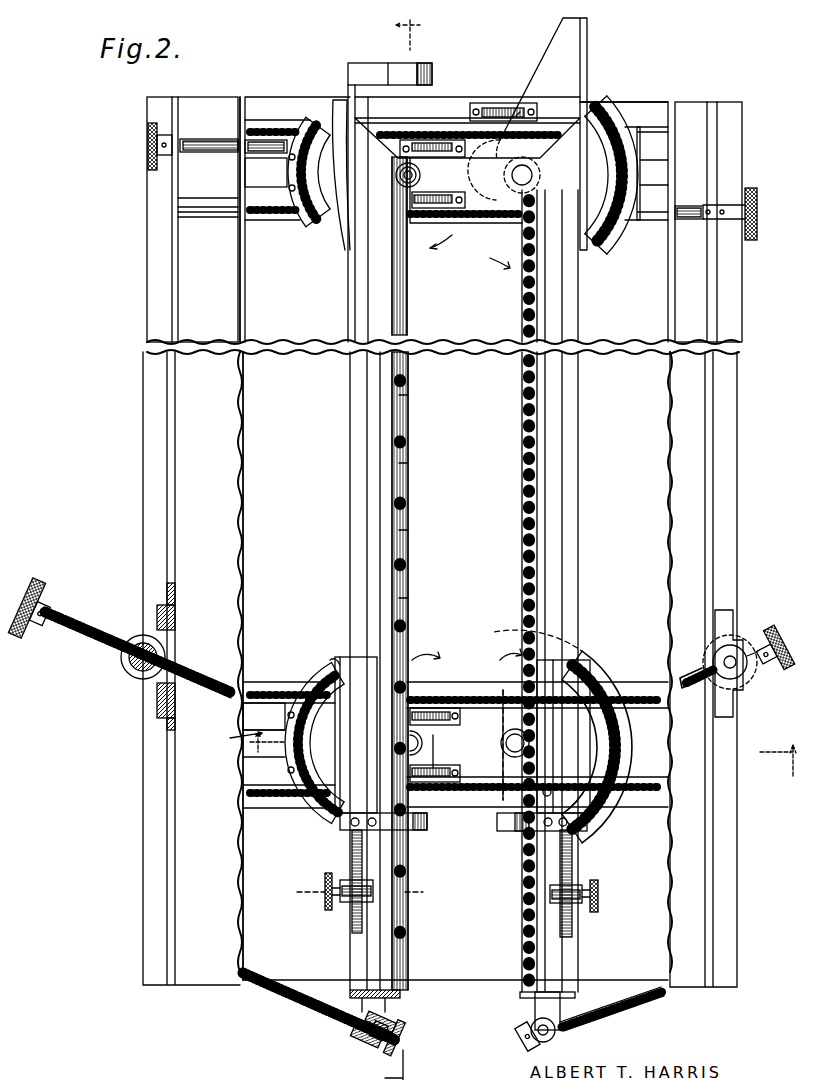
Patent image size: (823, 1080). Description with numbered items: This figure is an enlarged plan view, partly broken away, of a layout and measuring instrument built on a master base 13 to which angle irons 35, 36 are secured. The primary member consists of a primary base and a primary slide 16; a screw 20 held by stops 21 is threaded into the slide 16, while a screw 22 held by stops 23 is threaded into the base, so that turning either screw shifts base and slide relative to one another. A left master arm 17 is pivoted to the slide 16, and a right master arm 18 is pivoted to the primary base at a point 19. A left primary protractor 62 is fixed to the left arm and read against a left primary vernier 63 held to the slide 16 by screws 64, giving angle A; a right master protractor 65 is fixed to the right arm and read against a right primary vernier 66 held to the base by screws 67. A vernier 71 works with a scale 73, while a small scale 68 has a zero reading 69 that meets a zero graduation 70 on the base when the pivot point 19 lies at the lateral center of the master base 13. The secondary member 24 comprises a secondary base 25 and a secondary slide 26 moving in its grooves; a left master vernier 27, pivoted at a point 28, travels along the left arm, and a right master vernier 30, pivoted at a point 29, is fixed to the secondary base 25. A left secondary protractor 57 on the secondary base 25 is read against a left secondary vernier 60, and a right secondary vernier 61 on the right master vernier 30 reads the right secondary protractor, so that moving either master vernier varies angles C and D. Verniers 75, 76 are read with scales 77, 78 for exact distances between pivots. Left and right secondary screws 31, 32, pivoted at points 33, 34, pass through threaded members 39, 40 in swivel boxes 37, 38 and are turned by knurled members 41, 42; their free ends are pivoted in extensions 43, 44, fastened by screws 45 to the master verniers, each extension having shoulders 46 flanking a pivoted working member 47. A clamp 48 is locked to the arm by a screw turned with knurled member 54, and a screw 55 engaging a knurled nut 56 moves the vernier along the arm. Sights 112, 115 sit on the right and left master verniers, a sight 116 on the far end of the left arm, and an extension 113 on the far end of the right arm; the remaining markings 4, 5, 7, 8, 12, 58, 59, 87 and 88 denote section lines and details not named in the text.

The master base 13 is at (640, 487).
The angle iron 35 is at (170, 442).
The angle iron 36 is at (712, 412).
The left master arm 17 is at (365, 428).
The right master arm 18 is at (420, 176).
The sight 116 is at (420, 68).
The section line 7 is at (408, 550).
The extension 113 is at (590, 44).
The scale 73 is at (440, 125).
The small scale 68 is at (478, 105).
The zero reading 69 is at (520, 112).
The zero reading graduation 70 is at (530, 135).
The vernier 71 is at (418, 142).
The vernier scale 12 is at (466, 197).
The secondary member 24 is at (278, 118).
The guide grooves 87 is at (210, 212).
The stops 21 is at (164, 132).
The screw 20 is at (208, 138).
The screws 64 is at (290, 186).
The left primary vernier 63 is at (312, 118).
The left primary protractor 62 is at (340, 105).
The pivot point 19 is at (512, 174).
The right master protractor 65 is at (604, 110).
The right primary vernier 66 is at (632, 127).
The screws 67 is at (655, 130).
The base strip 88 is at (690, 115).
The primary slide 16 is at (660, 157).
The screw 22 is at (694, 218).
The stops 23 is at (742, 200).
The angle A is at (439, 250).
The arrow 8 is at (500, 255).
The swivel box 37 is at (120, 662).
The pivot point 33 is at (130, 665).
The threaded member 39 is at (140, 632).
The left secondary screw 31 is at (190, 668).
The knurled member 41 is at (35, 580).
The secondary base 25 is at (272, 800).
The scale 77 is at (245, 706).
The protractor plate 58 is at (298, 705).
The left secondary protractor 57 is at (318, 670).
The left secondary vernier 60 is at (332, 662).
The left master vernier 27 is at (345, 660).
The secondary slide 26 is at (486, 715).
The angle C is at (426, 661).
The angle D is at (506, 659).
The vernier 75 is at (445, 718).
The vernier 76 is at (452, 782).
The scale 78 is at (440, 795).
The pivot point 28 is at (415, 740).
The pivot point 29 is at (504, 744).
The sight 115 is at (422, 830).
The sight 112 is at (538, 832).
The right master vernier 30 is at (568, 655).
The protractor plate 59 is at (600, 690).
The right secondary vernier 61 is at (605, 720).
The swivel box 38 is at (735, 648).
The pivot point 34 is at (722, 660).
The knurled member 42 is at (778, 625).
The threaded member 40 is at (744, 682).
The right secondary screw 32 is at (690, 690).
The section line 4 is at (778, 767).
The screw 55 is at (352, 848).
The knurled nut 56 is at (350, 882).
The knurled member 54 is at (325, 878).
The clamp 48 is at (575, 887).
The section line 5 is at (359, 893).
The screws 45 is at (355, 980).
The extension 43 is at (385, 1005).
The shoulders 46 is at (392, 1022).
The working member 47 is at (365, 1044).
The extension 44 is at (535, 1006).